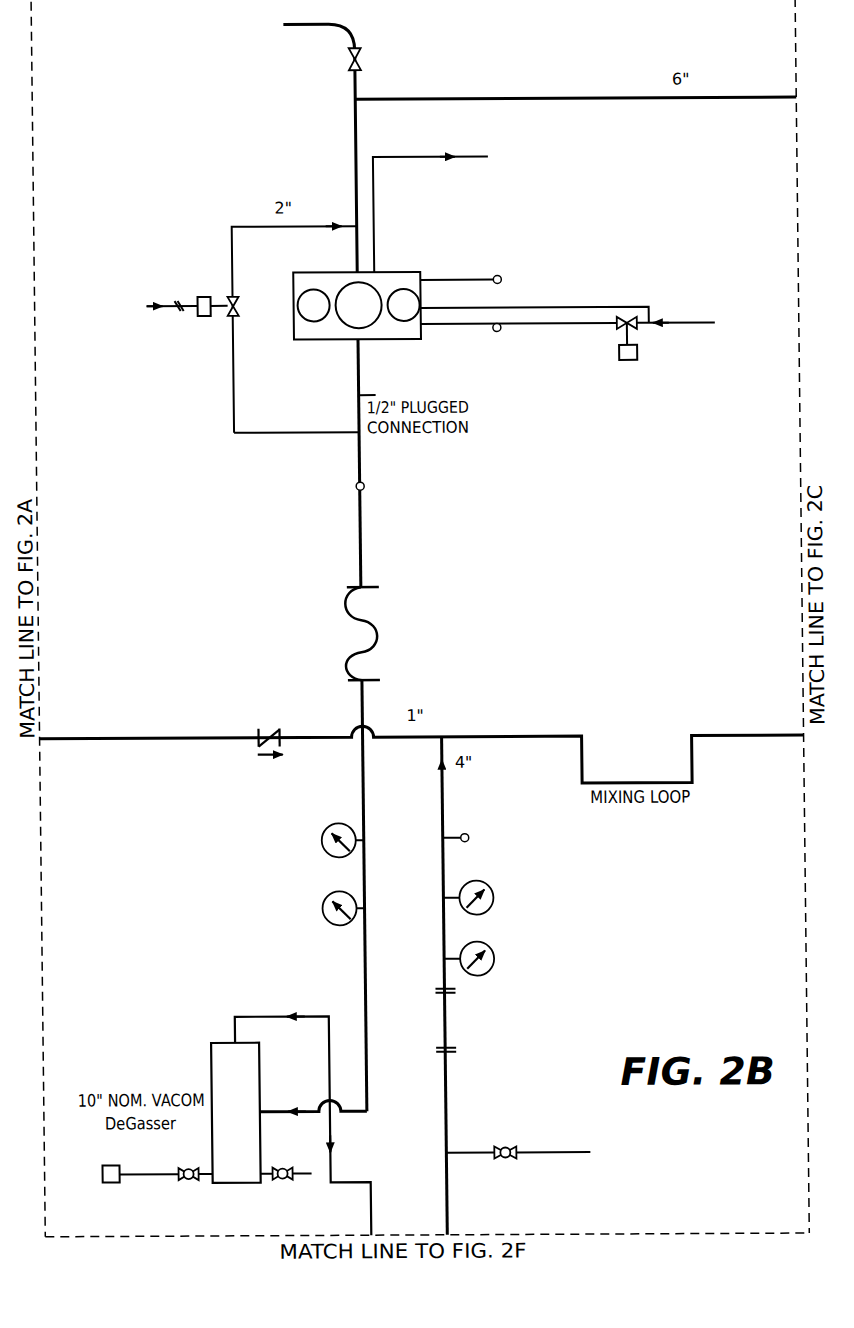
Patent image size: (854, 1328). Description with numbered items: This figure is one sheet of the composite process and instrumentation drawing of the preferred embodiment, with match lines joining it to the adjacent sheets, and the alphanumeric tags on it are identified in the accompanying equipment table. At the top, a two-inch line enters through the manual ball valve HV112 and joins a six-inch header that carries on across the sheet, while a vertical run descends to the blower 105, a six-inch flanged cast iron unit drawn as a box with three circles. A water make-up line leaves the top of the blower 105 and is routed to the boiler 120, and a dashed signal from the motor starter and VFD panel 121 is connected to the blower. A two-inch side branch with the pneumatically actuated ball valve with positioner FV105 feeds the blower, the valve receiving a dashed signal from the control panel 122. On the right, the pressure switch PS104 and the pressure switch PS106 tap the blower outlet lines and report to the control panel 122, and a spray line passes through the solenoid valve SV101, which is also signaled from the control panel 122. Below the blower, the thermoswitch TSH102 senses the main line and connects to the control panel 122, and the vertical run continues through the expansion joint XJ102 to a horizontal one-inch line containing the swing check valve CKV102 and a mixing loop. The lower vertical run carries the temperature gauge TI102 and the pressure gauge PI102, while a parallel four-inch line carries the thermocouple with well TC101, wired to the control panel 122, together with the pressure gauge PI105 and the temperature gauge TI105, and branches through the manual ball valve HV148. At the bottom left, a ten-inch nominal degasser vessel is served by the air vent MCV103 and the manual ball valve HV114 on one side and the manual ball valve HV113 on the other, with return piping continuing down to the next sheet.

The blower 105 is at (357, 306).
The boiler 120 is at (500, 205).
The motor starter and VFD panel 121 is at (412, 271).
The control panel 122 is at (490, 838).
The manual ball valve HV112 is at (335, 60).
The ball valve with pneumatic actuator and positioner FV105 is at (164, 328).
The pressure switch PS104 is at (475, 252).
The pressure switch PS106 is at (533, 351).
The solenoid valve SV101 is at (594, 349).
The thermoswitch TSH102 is at (331, 488).
The expansion joint XJ102 is at (335, 633).
The swing check valve CKV102 is at (270, 714).
The temperature gauge TI102 is at (316, 840).
The pressure gauge with diaphragm PI102 is at (317, 908).
The thermocouple with well TC101 is at (474, 810).
The pressure gauge with diaphragm PI105 is at (495, 897).
The temperature gauge TI105 is at (496, 958).
The manual ball valve HV148 is at (518, 1168).
The air vent MCV103 is at (132, 1201).
The manual ball valve HV114 is at (190, 1201).
The manual ball valve HV113 is at (286, 1200).